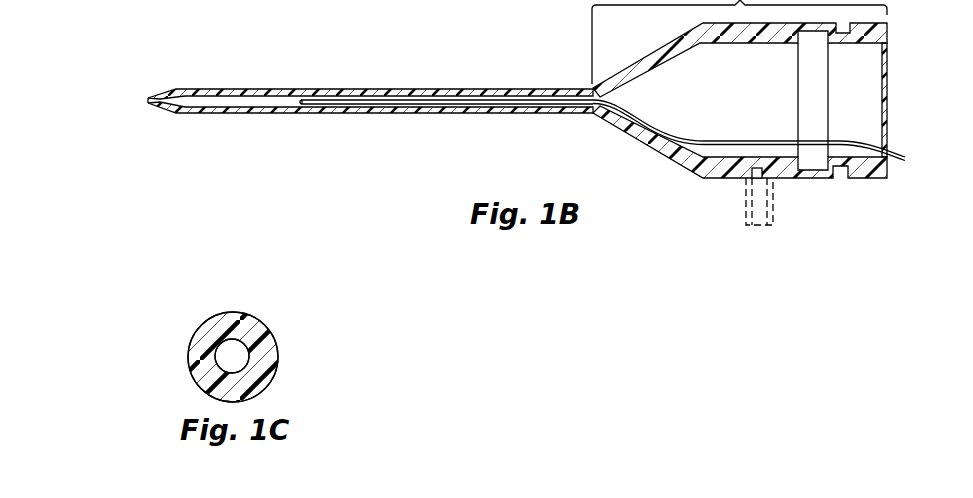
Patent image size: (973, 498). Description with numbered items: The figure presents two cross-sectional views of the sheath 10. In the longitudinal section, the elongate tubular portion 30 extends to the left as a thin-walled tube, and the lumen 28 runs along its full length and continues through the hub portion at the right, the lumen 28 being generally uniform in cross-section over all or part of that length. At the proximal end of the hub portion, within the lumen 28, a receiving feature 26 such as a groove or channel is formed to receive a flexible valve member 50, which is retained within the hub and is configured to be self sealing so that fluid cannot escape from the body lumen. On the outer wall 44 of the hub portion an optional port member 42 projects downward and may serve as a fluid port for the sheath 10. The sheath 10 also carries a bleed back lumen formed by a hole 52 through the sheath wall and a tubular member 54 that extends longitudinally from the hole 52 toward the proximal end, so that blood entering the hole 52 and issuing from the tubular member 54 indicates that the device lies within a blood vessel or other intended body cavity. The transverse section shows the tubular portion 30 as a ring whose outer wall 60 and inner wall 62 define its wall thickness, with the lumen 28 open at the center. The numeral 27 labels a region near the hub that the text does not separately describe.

In FIG. 1B, the sheath 10 is at (556, 151).
In FIG. 1B, the receiving feature 26 is at (811, 31).
In FIG. 1B, the handle end wall / channel 27 is at (830, 152).
In FIG. 1B, the lumen 28 is at (215, 102).
In FIG. 1C, the lumen 28 is at (228, 356).
In FIG. 1C, the tubular portion 30 is at (192, 306).
In FIG. 1B, the port member 42 is at (774, 212).
In FIG. 1B, the outer wall 44 is at (650, 148).
In FIG. 1B, the valve member 50 is at (815, 172).
In FIG. 1B, the hole 52 is at (302, 112).
In FIG. 1B, the tubular member 54 is at (898, 158).
In FIG. 1C, the outer wall 60 is at (250, 318).
In FIG. 1C, the inner wall 62 is at (245, 357).